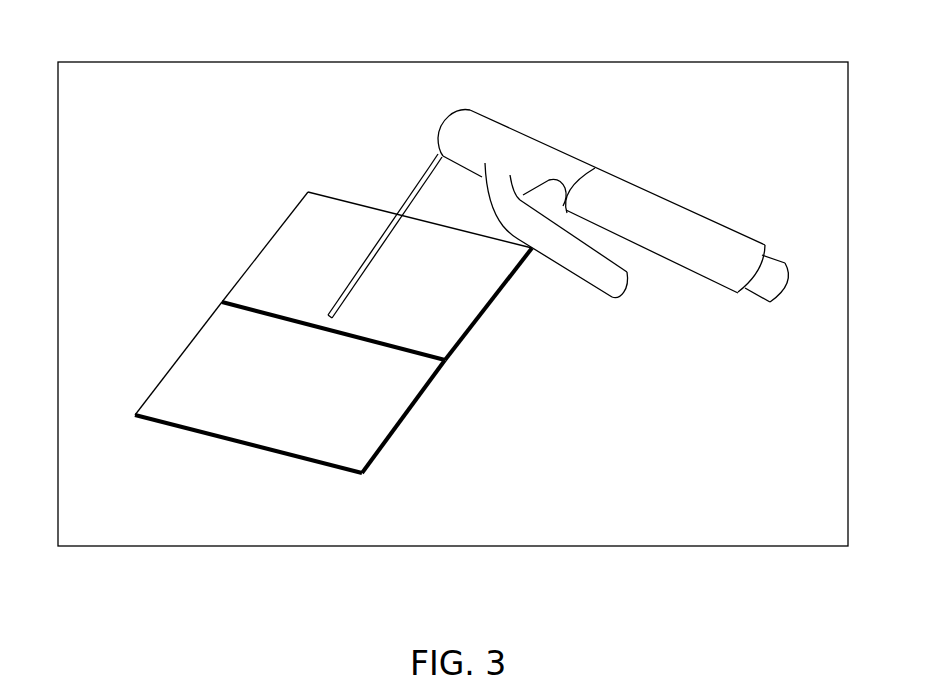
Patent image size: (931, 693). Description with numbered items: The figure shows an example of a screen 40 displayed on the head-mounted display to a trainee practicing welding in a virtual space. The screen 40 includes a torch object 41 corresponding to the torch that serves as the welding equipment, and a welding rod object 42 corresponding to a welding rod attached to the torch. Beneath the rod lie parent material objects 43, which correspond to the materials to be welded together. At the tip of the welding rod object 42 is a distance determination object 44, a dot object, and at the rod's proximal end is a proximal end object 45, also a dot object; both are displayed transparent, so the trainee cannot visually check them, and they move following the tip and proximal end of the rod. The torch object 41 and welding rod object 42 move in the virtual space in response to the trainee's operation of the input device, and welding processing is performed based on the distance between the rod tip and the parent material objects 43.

The screen 40 is at (757, 62).
The torch object 41 is at (543, 142).
The welding rod object 42 is at (390, 230).
The parent material objects 43 is at (247, 263).
The distance determination object 44 is at (330, 318).
The proximal end object 45 is at (441, 150).